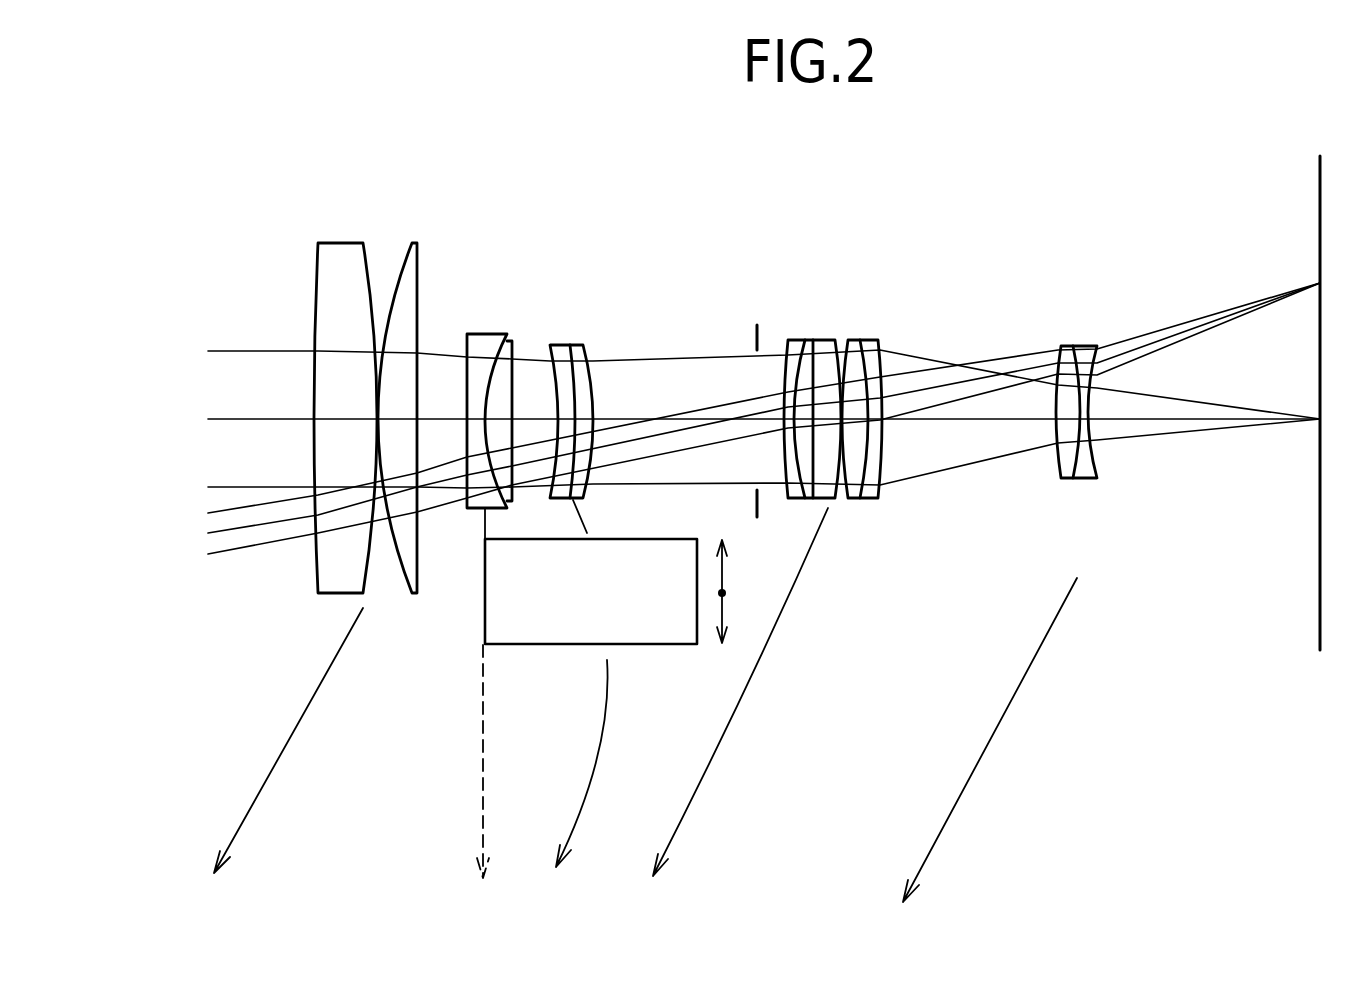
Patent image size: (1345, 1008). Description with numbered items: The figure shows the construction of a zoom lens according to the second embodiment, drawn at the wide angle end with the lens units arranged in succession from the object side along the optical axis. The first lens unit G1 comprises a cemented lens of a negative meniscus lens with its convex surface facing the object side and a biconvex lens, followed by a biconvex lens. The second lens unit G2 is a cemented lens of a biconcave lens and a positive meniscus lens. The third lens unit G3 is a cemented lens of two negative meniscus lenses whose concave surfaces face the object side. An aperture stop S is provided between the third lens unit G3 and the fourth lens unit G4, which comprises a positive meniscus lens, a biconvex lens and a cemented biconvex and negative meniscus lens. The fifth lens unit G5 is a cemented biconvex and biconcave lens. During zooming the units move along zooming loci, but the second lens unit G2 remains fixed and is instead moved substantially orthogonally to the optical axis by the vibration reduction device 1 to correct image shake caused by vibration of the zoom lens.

The first lens unit G1 is at (420, 232).
The second lens unit G2 is at (463, 298).
The third lens unit G3 is at (597, 323).
The fourth lens unit G4 is at (783, 332).
The fifth lens unit G5 is at (1110, 320).
The aperture stop S is at (752, 330).
The vibration reduction device 1 is at (672, 645).